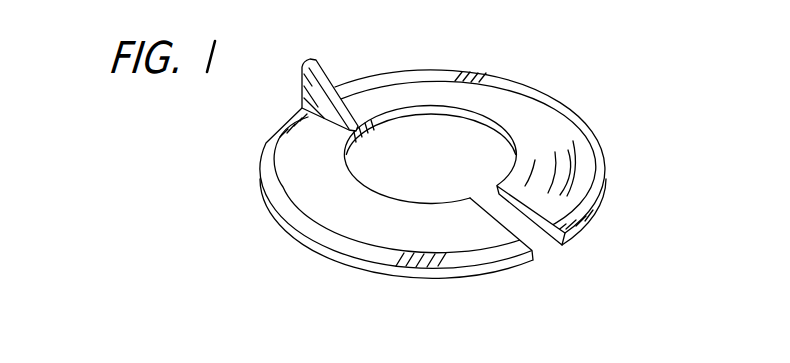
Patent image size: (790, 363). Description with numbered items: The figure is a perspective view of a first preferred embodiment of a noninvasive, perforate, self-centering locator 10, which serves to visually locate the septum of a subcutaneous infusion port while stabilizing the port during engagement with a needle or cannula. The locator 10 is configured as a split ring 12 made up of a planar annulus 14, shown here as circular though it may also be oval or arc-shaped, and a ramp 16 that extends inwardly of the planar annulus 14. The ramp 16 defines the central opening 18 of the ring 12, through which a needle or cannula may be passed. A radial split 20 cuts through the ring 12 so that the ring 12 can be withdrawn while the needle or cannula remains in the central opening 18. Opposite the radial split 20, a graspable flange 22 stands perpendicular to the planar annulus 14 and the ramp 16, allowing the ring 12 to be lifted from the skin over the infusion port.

The locator 10 is at (465, 159).
The split ring 12 is at (607, 180).
The planar annulus 14 is at (600, 188).
The ramp 16 is at (548, 202).
The central opening 18 is at (434, 136).
The radial split 20 is at (548, 248).
The graspable flange 22 is at (302, 64).